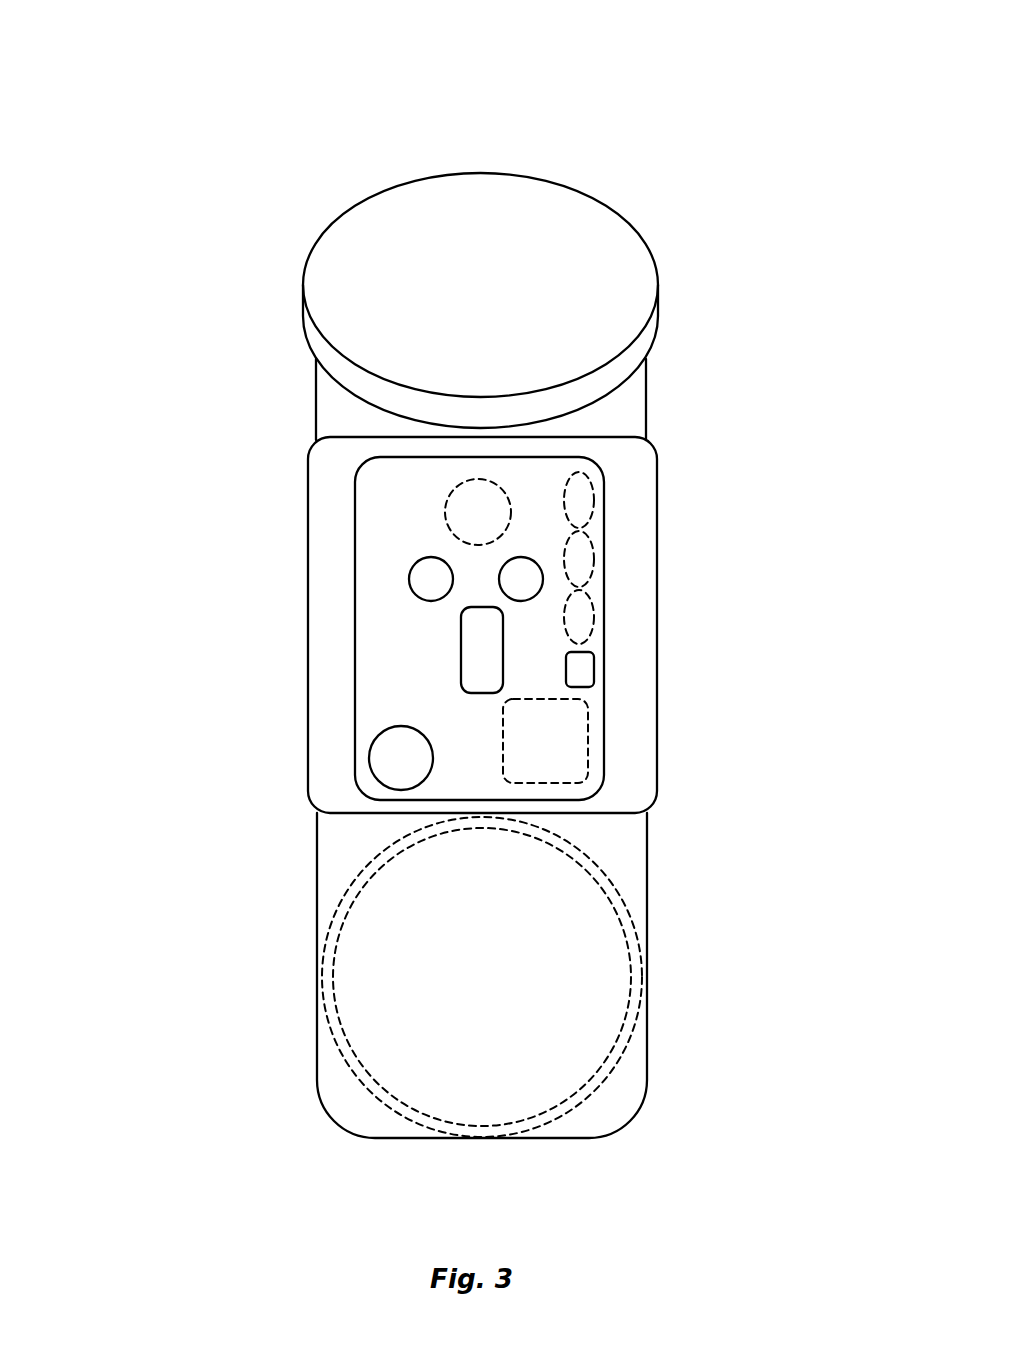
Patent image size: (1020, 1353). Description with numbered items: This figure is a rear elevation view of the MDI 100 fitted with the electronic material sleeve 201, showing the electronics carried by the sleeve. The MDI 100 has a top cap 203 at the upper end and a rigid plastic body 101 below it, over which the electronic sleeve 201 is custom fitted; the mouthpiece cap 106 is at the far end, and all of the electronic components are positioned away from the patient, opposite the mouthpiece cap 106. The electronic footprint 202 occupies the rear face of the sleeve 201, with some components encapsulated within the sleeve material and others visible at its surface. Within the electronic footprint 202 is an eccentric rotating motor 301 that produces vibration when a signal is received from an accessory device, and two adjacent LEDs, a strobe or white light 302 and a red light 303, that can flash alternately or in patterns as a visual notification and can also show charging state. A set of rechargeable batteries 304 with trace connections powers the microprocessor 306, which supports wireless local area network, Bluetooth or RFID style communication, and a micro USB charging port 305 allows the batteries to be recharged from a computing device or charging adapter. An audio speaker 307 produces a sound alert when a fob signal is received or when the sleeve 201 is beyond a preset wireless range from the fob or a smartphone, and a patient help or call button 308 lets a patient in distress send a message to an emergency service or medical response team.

The MDI 100 is at (546, 146).
The rigid plastic body 101 is at (648, 1020).
The mouthpiece cap 106 is at (633, 920).
The electronic material sleeve 201 is at (308, 497).
The electronic footprint 202 is at (353, 663).
The top cap 203 is at (373, 195).
The eccentric rotating motor 301 is at (445, 512).
The white light LED 302 is at (409, 581).
The red light LED 303 is at (499, 582).
The rechargeable batteries 304 is at (594, 617).
The micro USB charging port 305 is at (596, 668).
The microprocessor 306 is at (590, 748).
The audio speaker 307 is at (370, 773).
The patient help or call button 308 is at (461, 649).